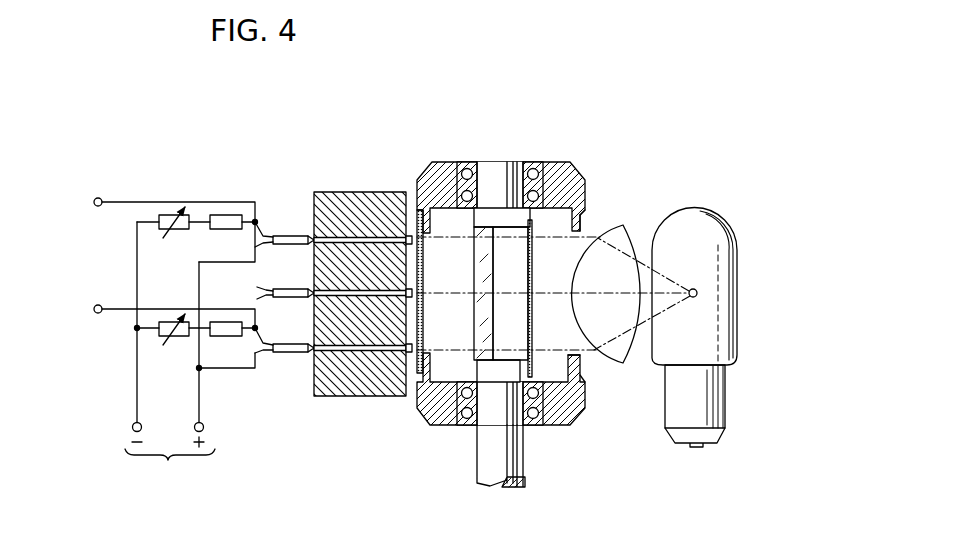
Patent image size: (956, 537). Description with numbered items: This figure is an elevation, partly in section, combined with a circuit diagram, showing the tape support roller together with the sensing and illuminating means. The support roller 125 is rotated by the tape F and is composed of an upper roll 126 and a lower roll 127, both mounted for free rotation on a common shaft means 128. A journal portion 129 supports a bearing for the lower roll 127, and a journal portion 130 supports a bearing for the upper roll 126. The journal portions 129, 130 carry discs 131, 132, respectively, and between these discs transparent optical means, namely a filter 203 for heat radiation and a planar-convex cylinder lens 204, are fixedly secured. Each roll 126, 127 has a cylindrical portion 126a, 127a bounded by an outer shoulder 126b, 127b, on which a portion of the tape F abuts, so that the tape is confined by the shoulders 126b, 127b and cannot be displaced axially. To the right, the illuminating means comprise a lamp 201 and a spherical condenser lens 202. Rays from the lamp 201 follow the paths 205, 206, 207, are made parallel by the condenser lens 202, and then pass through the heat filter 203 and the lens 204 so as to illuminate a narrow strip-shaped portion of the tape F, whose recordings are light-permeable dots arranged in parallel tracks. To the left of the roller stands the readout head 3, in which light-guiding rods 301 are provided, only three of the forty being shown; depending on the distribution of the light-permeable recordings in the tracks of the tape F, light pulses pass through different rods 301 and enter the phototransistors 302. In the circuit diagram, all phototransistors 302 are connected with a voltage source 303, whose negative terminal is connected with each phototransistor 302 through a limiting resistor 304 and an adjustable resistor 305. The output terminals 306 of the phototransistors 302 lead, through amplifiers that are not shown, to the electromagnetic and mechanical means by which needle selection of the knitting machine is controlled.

The readout head 3 is at (354, 270).
The support roller 125 is at (540, 276).
The upper roll 126 is at (540, 188).
The cylindrical portion 126a is at (586, 203).
The outer shoulder 126b is at (586, 222).
The lower roll 127 is at (539, 404).
The cylindrical portion 127a is at (582, 381).
The outer shoulder 127b is at (582, 368).
The common shaft means 128 is at (488, 457).
The journal portion 129 is at (488, 415).
The journal portion 130 is at (497, 163).
The disc 131 is at (478, 367).
The disc 132 is at (477, 212).
The lamp 201 is at (694, 328).
The spherical condenser lens 202 is at (627, 287).
The filter for heat radiation 203 is at (533, 277).
The planar-convex cylinder lens 204 is at (485, 328).
The ray path 205 is at (659, 271).
The ray path 206 is at (694, 289).
The ray path 207 is at (672, 328).
The light-guiding rods 301 is at (387, 347).
The phototransistors 302 is at (292, 236).
The voltage source 303 is at (191, 356).
The limiting resistor 304 is at (230, 215).
The adjustable resistor 305 is at (167, 216).
The output terminals 306 is at (96, 207).
The tape F is at (424, 275).